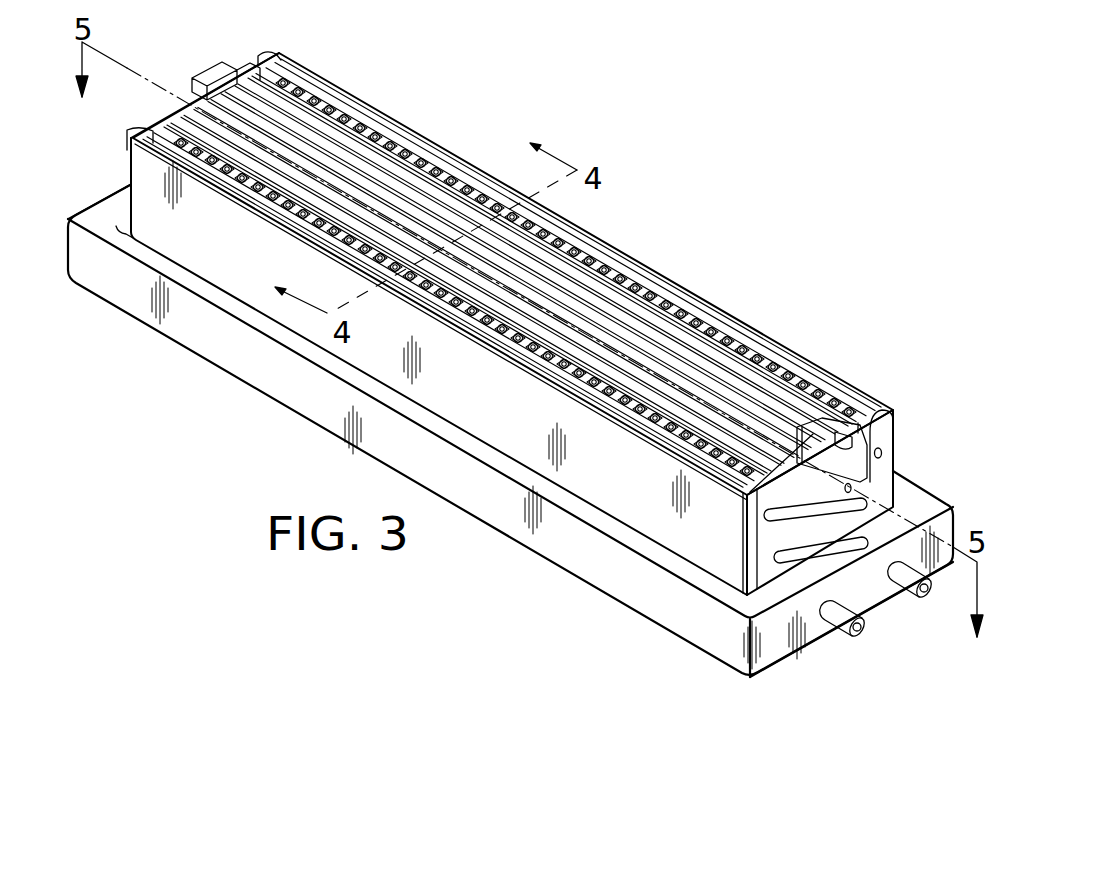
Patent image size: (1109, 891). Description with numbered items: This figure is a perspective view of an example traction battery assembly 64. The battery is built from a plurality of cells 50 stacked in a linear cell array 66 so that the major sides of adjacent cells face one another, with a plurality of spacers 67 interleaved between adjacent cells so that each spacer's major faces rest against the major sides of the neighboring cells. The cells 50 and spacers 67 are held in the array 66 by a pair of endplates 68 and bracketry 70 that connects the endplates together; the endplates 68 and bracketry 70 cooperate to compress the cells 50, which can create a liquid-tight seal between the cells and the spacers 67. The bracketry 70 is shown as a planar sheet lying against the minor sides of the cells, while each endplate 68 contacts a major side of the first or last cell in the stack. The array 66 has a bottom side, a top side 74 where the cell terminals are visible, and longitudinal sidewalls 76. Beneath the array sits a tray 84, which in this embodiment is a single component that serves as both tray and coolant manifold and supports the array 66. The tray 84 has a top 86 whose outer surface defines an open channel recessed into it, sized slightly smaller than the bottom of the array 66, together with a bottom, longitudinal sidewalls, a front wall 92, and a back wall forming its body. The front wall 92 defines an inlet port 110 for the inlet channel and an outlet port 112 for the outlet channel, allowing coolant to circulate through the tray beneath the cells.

The cells 50 is at (680, 312).
The traction battery assembly 64 is at (667, 178).
The linear cell array 66 is at (328, 153).
The spacers 67 is at (400, 183).
The endplates 68 is at (870, 482).
The bracketry 70 is at (195, 207).
The top side 74 is at (775, 387).
The longitudinal sidewalls 76 is at (645, 507).
The tray 84 is at (265, 367).
The top 86 is at (112, 210).
The front wall 92 is at (773, 653).
The inlet port 110 is at (928, 596).
The outlet port 112 is at (858, 636).